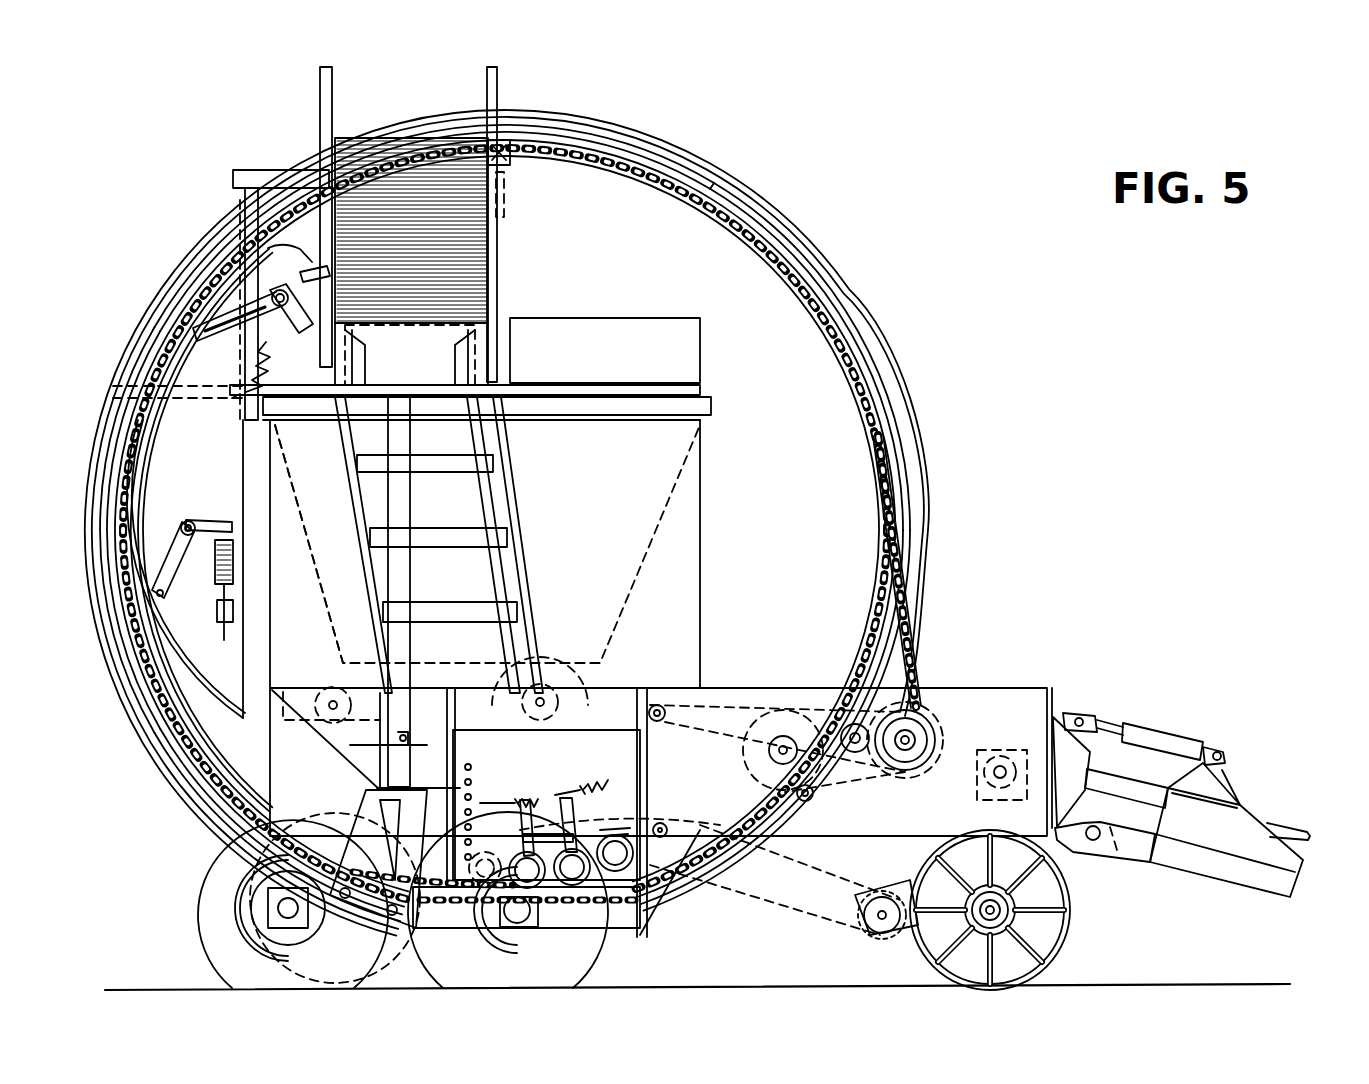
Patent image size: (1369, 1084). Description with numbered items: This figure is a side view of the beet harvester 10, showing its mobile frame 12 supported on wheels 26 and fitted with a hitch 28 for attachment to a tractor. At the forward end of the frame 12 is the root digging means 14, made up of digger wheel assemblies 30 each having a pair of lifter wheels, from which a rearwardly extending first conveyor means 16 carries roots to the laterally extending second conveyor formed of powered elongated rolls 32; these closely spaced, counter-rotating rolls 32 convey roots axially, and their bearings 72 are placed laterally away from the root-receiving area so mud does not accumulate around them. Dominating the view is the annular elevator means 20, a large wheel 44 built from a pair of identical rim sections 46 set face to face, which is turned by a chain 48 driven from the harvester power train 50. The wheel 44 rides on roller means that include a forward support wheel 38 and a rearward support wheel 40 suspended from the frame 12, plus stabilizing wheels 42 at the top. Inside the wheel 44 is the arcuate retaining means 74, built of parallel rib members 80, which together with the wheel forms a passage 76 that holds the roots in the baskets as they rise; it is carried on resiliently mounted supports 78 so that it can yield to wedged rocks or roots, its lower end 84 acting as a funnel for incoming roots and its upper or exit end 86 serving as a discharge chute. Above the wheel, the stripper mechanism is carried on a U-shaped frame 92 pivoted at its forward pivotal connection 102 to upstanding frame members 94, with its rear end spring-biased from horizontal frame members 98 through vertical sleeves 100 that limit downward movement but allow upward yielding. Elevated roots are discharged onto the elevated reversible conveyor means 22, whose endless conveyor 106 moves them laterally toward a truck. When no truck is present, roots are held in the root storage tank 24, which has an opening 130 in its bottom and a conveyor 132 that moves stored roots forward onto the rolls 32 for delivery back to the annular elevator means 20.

The beet harvester 10 is at (952, 183).
The mobile frame 12 is at (1014, 690).
The root digging means 14 is at (1110, 851).
The first conveyor means 16 is at (920, 935).
The annular elevator means 20 is at (876, 320).
The elevated reversible conveyor means 22 is at (457, 226).
The root storage tank 24 is at (680, 350).
The wheels 26 is at (206, 920).
The hitch 28 is at (1225, 870).
The digger wheel assemblies 30 is at (1084, 924).
The powered elongated rolls 32 is at (620, 905).
The support wheel 38 is at (800, 870).
The support wheel 40 is at (360, 926).
The stabilizing wheels 42 is at (522, 150).
The wheel member 44 is at (670, 152).
The rim sections 46 is at (825, 278).
The chain 48 is at (905, 672).
The harvester power train 50 is at (930, 722).
The bearings 72 is at (583, 850).
The retaining means 74 is at (144, 488).
The passage 76 is at (106, 535).
The resiliently mounted supports 78 is at (273, 356).
The rib members 80 is at (140, 548).
The lower end 84 is at (212, 700).
The upper or exit end 86 is at (288, 268).
The U-shaped frame 92 is at (255, 170).
The upstanding frame members 94 is at (508, 230).
The horizontal frame members 98 is at (122, 393).
The vertical sleeves 100 is at (246, 214).
The pivotal connection 102 is at (537, 194).
The endless conveyor 106 is at (432, 245).
The opening 130 is at (437, 544).
The conveyor 132 is at (440, 686).